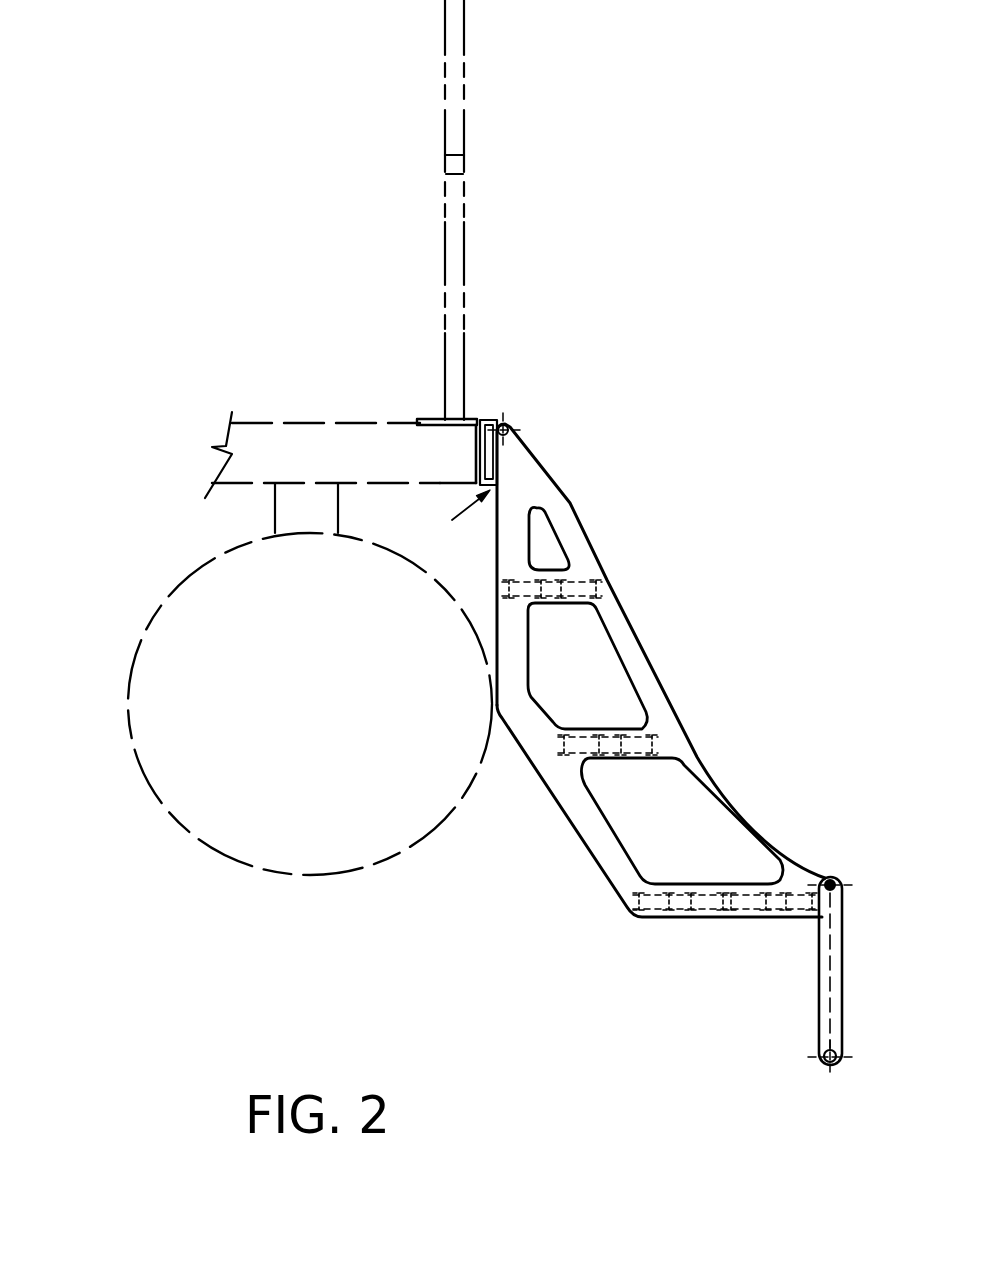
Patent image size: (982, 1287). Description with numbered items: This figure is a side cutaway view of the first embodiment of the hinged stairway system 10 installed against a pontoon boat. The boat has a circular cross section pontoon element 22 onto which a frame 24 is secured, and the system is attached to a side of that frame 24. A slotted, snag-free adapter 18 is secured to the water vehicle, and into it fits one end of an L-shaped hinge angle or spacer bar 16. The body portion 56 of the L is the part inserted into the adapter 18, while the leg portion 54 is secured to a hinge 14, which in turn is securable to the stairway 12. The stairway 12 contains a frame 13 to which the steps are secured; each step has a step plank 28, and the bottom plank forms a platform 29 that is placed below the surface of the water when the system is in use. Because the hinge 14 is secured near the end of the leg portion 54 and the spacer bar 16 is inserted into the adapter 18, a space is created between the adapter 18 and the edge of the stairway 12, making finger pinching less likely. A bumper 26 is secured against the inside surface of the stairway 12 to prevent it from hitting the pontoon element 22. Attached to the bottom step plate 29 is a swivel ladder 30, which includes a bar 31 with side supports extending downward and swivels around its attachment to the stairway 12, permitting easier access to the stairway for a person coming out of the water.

The hinged stairway system 10 is at (768, 429).
The stairway 12 is at (580, 498).
The frame 13 is at (728, 802).
The hinge 14 is at (508, 424).
The hinge angle or spacer bar 16 is at (478, 418).
The slotted, snag-free adapter 18 is at (428, 416).
The pontoon element 22 is at (308, 707).
The frame 24 is at (293, 447).
The bumper 26 is at (493, 674).
The step plank 28 is at (578, 580).
The platform 29 is at (790, 888).
The swivel ladder 30 is at (817, 1010).
The bar 31 is at (829, 1053).
The leg portion 54 is at (498, 452).
The body portion 56 is at (488, 416).